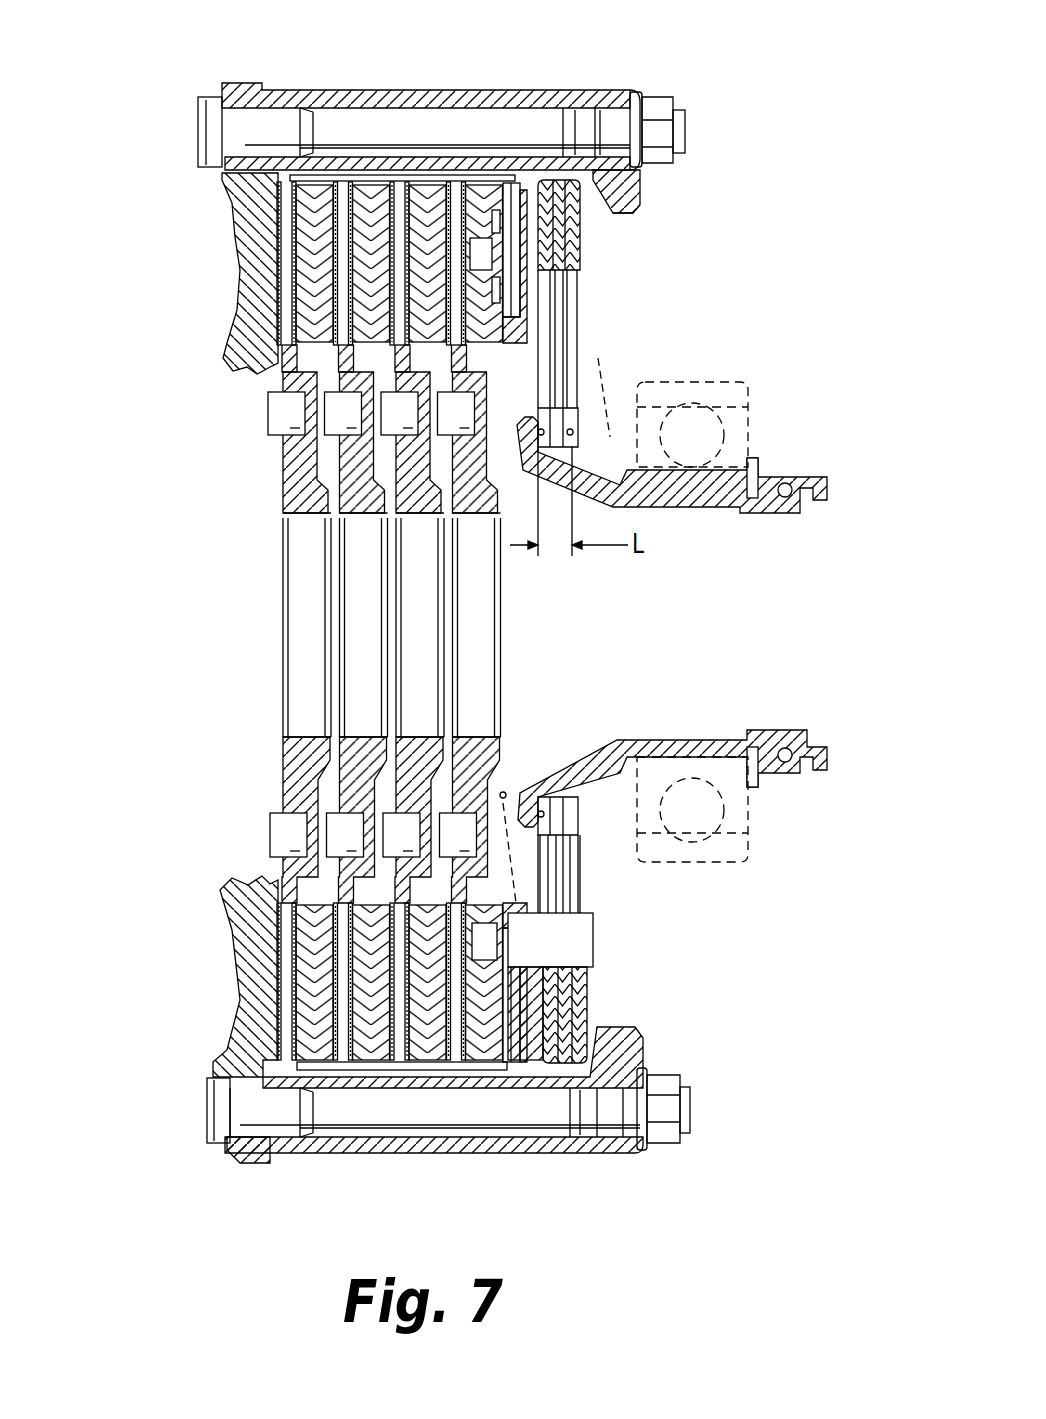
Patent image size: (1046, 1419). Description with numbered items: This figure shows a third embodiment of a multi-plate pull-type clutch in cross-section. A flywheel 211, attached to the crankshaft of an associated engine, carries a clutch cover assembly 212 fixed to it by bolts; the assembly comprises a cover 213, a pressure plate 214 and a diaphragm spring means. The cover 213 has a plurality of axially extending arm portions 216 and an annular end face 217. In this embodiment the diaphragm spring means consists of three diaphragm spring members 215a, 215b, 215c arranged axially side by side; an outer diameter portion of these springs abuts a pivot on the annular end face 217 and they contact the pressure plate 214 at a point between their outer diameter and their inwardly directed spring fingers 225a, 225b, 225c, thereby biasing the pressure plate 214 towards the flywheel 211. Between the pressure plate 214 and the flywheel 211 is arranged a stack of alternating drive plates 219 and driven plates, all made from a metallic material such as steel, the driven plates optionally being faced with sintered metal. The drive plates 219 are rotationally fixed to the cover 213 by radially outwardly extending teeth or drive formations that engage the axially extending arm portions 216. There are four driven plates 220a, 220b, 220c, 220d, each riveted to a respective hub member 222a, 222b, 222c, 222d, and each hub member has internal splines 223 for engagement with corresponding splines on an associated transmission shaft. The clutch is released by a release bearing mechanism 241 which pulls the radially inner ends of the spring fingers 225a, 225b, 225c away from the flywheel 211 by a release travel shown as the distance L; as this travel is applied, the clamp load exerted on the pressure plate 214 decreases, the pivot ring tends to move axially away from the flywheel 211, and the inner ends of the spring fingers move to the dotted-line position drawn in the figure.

The flywheel 211 is at (238, 291).
The clutch cover assembly 212 is at (672, 86).
The cover 213 is at (635, 209).
The pressure plate 214 is at (513, 995).
The diaphragm spring member 215a is at (577, 232).
The diaphragm spring member 215b is at (550, 267).
The diaphragm spring member 215c is at (563, 275).
The axially extending arm portions 216 is at (503, 90).
The annular end face 217 is at (637, 195).
The drive plates 219 is at (433, 1050).
The driven plate 220a is at (283, 210).
The driven plate 220b is at (339, 232).
The driven plate 220c is at (403, 232).
The driven plate 220d is at (457, 232).
The hub member 222a is at (292, 737).
The hub member 222b is at (316, 746).
The hub member 222c is at (420, 745).
The hub member 222d is at (478, 747).
The internal splines 223 is at (300, 518).
The spring fingers 225a is at (580, 890).
The spring fingers 225b is at (560, 828).
The spring fingers 225c is at (542, 820).
The release bearing mechanism 241 is at (280, 327).